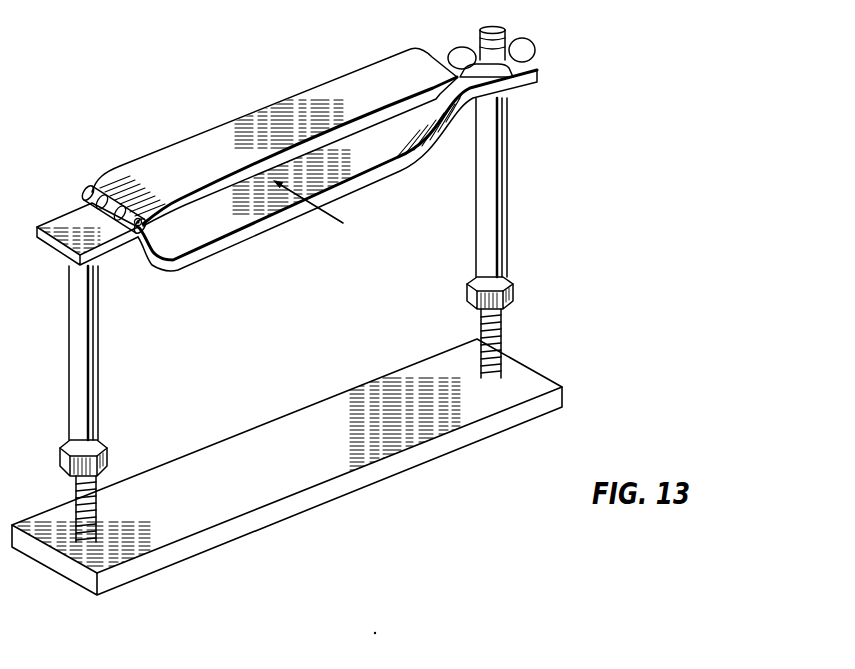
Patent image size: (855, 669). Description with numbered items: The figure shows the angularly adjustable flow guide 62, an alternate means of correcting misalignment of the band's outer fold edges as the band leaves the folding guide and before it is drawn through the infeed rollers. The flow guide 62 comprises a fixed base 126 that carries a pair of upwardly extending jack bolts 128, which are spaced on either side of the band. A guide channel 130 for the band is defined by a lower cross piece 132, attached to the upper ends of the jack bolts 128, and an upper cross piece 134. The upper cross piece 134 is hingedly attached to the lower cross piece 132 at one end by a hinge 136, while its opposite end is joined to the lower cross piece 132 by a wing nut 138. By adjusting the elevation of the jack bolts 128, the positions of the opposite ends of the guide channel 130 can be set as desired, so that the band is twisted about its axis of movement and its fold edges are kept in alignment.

The angularly adjustable flow guide 62 is at (260, 78).
The fixed base 126 is at (528, 386).
The jack bolts 128 is at (97, 327).
The guide channel 130 is at (213, 232).
The lower cross piece 132 is at (261, 220).
The upper cross piece 134 is at (178, 157).
The hinge 136 is at (88, 189).
The wing nut 138 is at (533, 46).